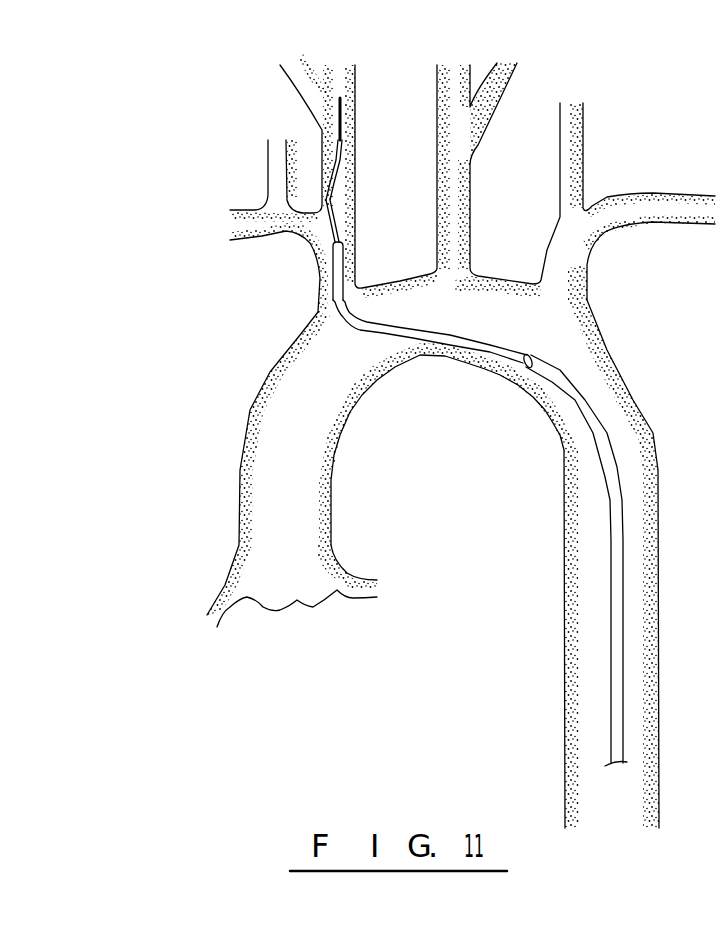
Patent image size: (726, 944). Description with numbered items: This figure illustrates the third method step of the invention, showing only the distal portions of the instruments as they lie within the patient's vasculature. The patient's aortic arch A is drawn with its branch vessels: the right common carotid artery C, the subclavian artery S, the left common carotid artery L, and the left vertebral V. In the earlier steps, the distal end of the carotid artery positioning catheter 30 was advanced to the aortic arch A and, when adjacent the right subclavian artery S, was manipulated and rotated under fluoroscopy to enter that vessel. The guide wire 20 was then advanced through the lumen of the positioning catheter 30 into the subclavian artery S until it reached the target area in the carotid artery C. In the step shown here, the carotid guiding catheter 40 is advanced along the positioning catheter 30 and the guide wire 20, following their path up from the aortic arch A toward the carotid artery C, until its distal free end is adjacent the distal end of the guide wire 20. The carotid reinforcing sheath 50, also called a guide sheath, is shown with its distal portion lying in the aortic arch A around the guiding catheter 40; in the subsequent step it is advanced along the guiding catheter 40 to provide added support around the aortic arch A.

The guide wire 20 is at (340, 125).
The carotid artery positioning catheter 30 is at (331, 193).
The carotid guiding catheter 40 is at (333, 277).
The carotid reinforcing sheath 50 is at (553, 386).
The right common carotid artery C is at (358, 133).
The left common carotid artery L is at (470, 173).
The left vertebral V is at (583, 157).
The subclavian artery S is at (293, 237).
The patient's aortic arch A is at (427, 358).